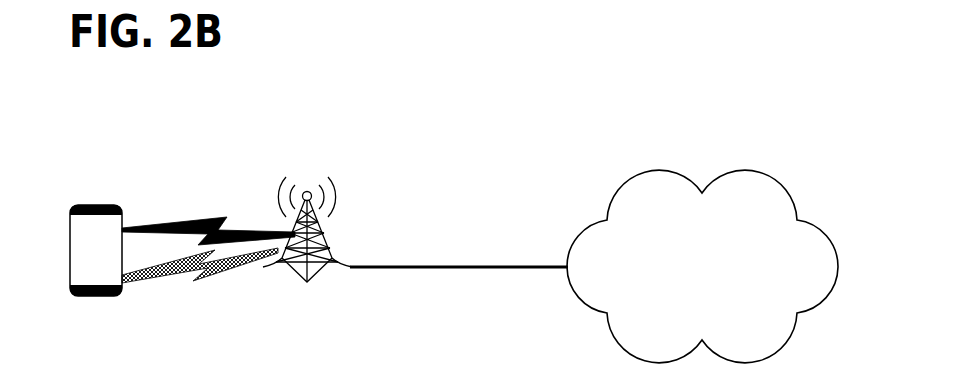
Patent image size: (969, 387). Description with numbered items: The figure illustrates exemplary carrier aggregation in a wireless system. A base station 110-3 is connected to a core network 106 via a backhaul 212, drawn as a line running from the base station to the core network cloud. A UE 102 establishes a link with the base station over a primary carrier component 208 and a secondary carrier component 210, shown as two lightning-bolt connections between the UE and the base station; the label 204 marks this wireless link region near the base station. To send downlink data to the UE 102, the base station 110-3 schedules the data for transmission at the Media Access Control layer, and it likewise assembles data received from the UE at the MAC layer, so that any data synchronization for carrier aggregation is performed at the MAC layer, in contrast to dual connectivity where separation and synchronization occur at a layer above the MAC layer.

The UE 102 is at (104, 204).
The primary carrier component 208 is at (224, 218).
The secondary carrier component 210 is at (204, 278).
The wireless link 204 is at (306, 146).
The base station 110-3 is at (335, 250).
The backhaul 212 is at (505, 268).
The core network 106 is at (702, 266).